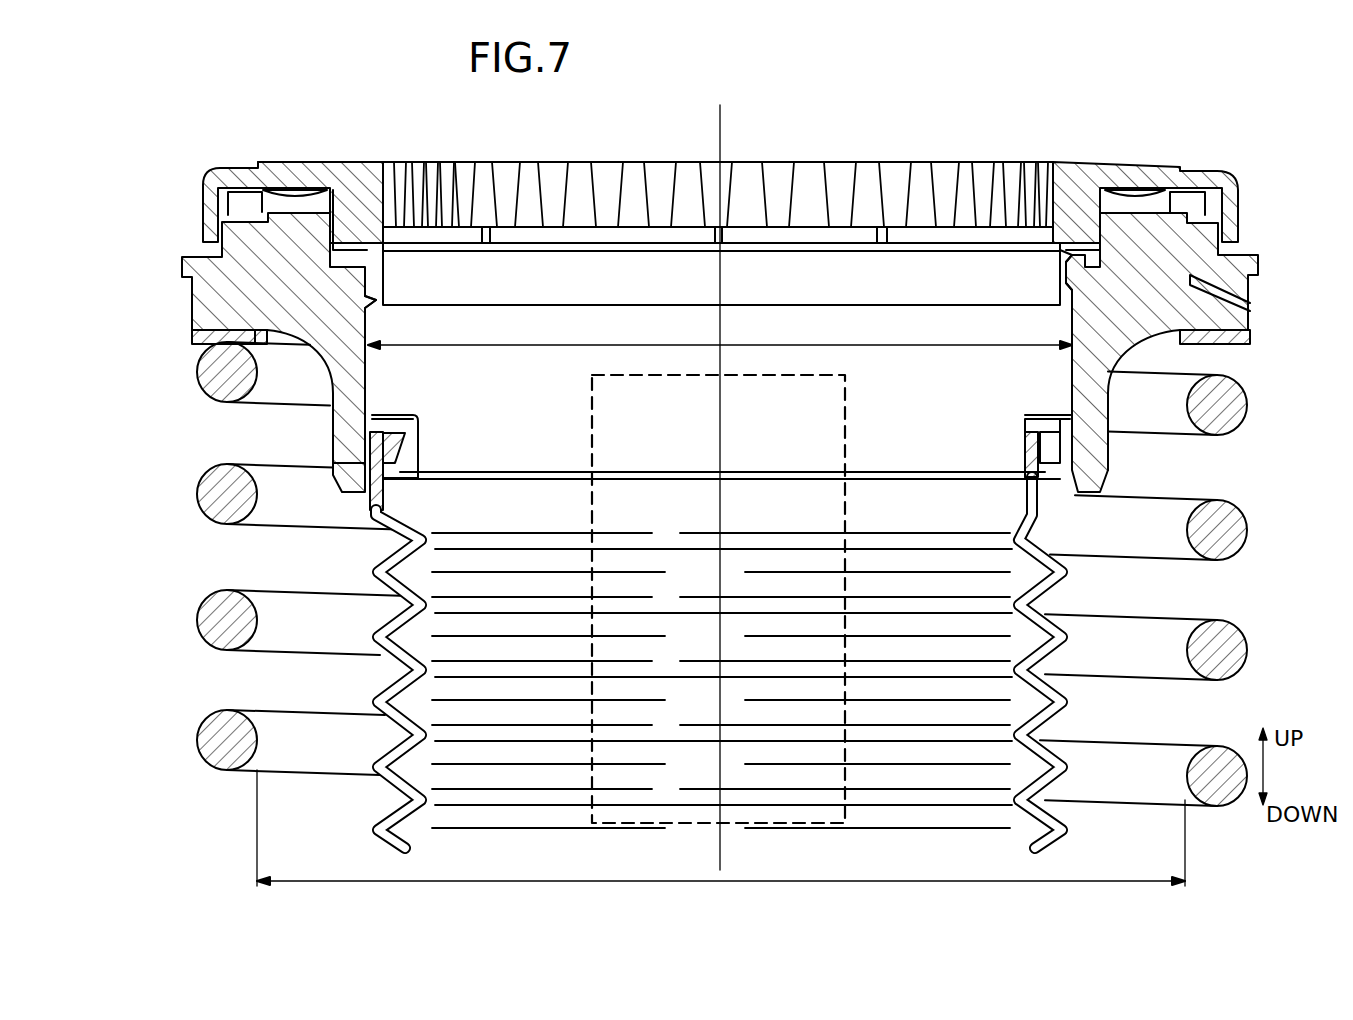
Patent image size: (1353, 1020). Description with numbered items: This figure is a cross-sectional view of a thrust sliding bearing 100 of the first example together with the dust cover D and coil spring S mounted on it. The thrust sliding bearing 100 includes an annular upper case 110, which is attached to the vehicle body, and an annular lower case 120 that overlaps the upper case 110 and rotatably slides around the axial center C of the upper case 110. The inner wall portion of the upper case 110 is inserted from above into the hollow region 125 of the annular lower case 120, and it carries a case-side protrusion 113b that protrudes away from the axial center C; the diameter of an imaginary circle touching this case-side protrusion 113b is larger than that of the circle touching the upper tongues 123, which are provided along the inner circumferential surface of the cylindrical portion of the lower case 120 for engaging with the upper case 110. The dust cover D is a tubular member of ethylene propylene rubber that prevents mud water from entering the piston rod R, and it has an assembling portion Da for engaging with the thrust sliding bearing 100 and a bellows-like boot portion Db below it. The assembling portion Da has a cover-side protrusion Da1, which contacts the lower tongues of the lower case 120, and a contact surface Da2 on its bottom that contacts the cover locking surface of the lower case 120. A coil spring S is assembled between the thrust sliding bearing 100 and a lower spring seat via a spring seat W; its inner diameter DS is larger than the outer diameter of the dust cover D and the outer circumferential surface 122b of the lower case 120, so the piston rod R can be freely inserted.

The thrust sliding bearing 100 is at (1158, 146).
The upper case 110 is at (1105, 162).
The lower case 120 is at (1258, 265).
The case-side protrusion 113b is at (376, 302).
The upper tongues 123 is at (1060, 262).
The hollow region 125 is at (542, 393).
The outer circumferential surface 122b is at (1110, 456).
The axial center C is at (719, 474).
The spring seat W is at (192, 337).
The coil spring S is at (1247, 407).
The dust cover D is at (372, 568).
The assembling portion Da is at (985, 350).
The cover-side protrusion Da1 is at (1050, 430).
The contact surface Da2 is at (1072, 425).
The boot portion Db is at (1025, 537).
The piston rod R is at (845, 433).
The inner diameter of the coil spring DS is at (721, 844).